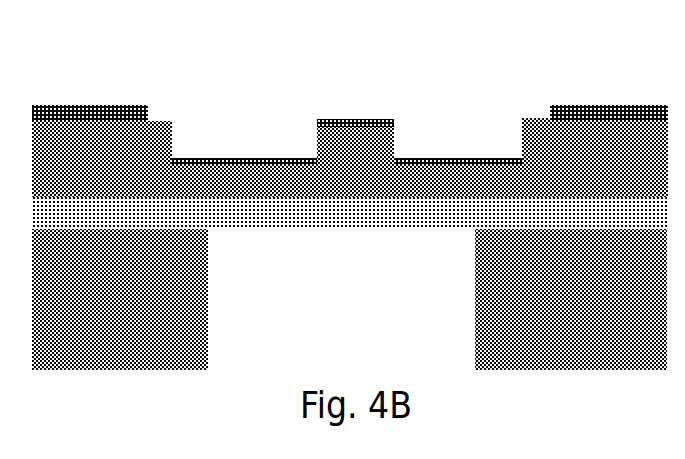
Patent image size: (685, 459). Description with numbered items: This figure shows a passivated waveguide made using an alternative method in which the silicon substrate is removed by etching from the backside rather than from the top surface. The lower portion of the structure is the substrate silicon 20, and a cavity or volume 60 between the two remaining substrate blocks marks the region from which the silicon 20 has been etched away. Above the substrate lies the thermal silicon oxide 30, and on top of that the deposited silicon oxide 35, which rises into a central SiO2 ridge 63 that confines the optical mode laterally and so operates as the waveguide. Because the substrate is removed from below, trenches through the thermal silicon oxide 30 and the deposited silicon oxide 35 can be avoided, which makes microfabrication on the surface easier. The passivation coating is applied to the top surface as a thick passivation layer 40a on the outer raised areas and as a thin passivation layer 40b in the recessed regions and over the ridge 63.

The silicon 20 is at (613, 346).
The thermal silicon oxide 30 is at (328, 223).
The deposited silicon oxide 35 is at (83, 180).
The passivation layer thick coating 40a is at (90, 118).
The passivation layer thin coating 40b is at (255, 165).
The cavity or volume 60 is at (330, 320).
The SiO2 ridge 63 is at (342, 163).